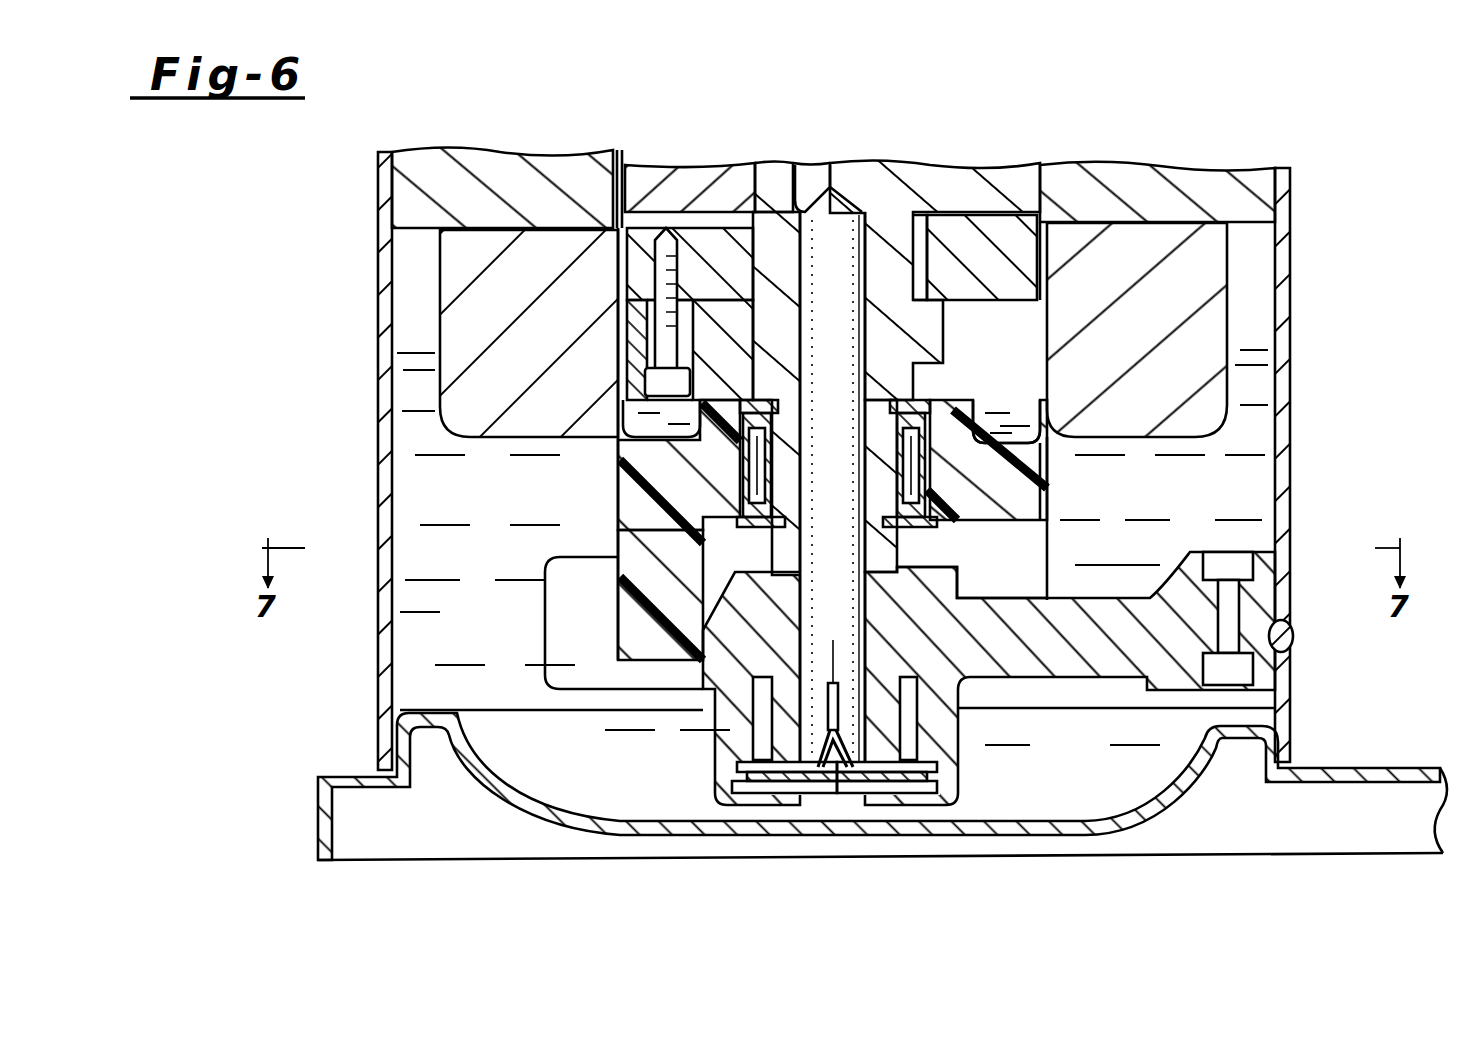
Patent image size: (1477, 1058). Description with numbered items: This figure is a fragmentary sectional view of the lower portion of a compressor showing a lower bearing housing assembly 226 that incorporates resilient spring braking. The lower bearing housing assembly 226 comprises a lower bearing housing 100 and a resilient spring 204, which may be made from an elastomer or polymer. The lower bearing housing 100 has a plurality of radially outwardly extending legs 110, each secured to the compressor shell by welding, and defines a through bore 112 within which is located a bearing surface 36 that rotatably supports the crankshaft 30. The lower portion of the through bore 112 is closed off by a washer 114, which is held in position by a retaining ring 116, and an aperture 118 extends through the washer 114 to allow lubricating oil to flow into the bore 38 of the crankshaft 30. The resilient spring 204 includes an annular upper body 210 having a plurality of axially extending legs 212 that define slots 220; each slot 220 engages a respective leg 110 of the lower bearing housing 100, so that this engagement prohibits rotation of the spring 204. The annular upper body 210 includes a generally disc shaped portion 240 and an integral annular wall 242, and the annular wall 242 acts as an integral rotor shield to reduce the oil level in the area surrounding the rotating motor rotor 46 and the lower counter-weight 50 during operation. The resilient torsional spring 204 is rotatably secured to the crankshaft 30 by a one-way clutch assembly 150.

The crankshaft 30 is at (890, 196).
The motor rotor 46 is at (730, 187).
The lower counter-weight 50 is at (723, 330).
The one-way clutch assembly 150 is at (903, 473).
The disc shaped portion 240 is at (1017, 500).
The resilient spring 204 is at (1178, 489).
The lower bearing housing 100 is at (1267, 570).
The annular wall 242 is at (625, 372).
The lower bearing housing assembly 226 is at (466, 500).
The annular upper body 210 is at (693, 485).
The axially extending legs 212 is at (647, 567).
The through bore 112 is at (768, 676).
The washer 114 is at (730, 790).
The aperture 118 is at (837, 772).
The retaining ring 116 is at (917, 785).
The legs 110 is at (1123, 655).
The slots 220 is at (1283, 640).
The bearing surface 36 is at (896, 587).
The bore 38 is at (848, 546).